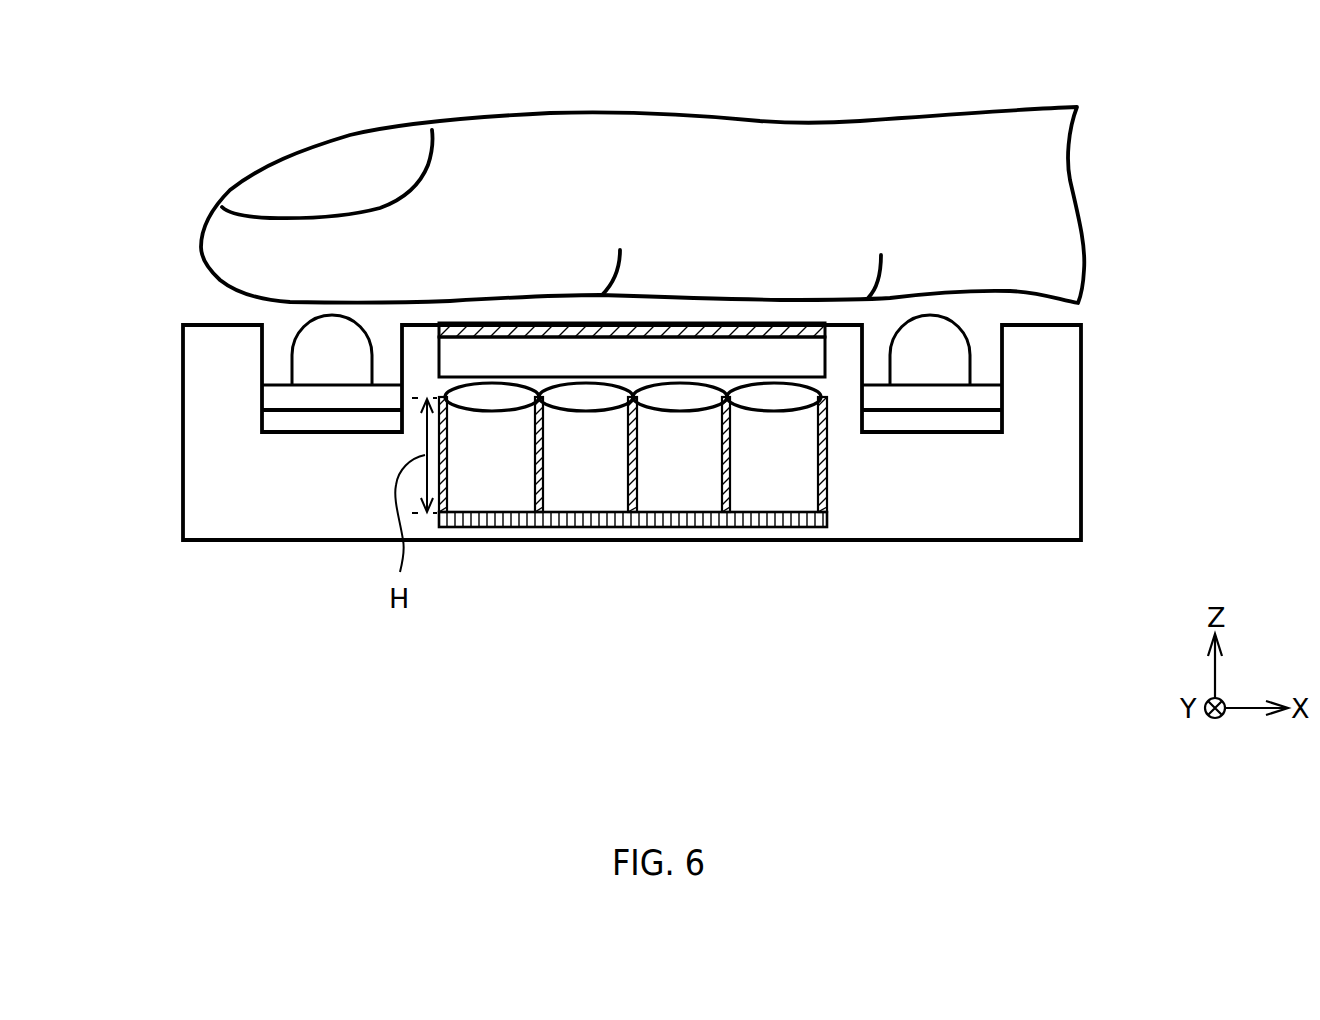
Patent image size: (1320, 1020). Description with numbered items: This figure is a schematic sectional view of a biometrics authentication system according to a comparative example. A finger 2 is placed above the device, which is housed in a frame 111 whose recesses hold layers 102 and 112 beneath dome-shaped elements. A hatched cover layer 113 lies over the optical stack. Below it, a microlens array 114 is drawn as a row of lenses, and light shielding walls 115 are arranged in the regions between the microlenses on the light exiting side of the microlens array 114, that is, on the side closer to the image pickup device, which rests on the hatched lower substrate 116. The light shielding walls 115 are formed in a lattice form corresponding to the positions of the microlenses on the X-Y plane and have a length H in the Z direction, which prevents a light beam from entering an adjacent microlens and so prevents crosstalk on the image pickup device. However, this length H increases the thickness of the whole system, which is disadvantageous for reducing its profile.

The finger 2 is at (855, 121).
The display panel 102 is at (283, 397).
The housing 111 is at (1070, 348).
The substrate layer 112 is at (985, 396).
The cover layer 113 is at (822, 321).
The microlens array 114 is at (805, 397).
The light shielding walls 115 is at (827, 443).
The photoelectric sensor substrate 116 is at (827, 517).